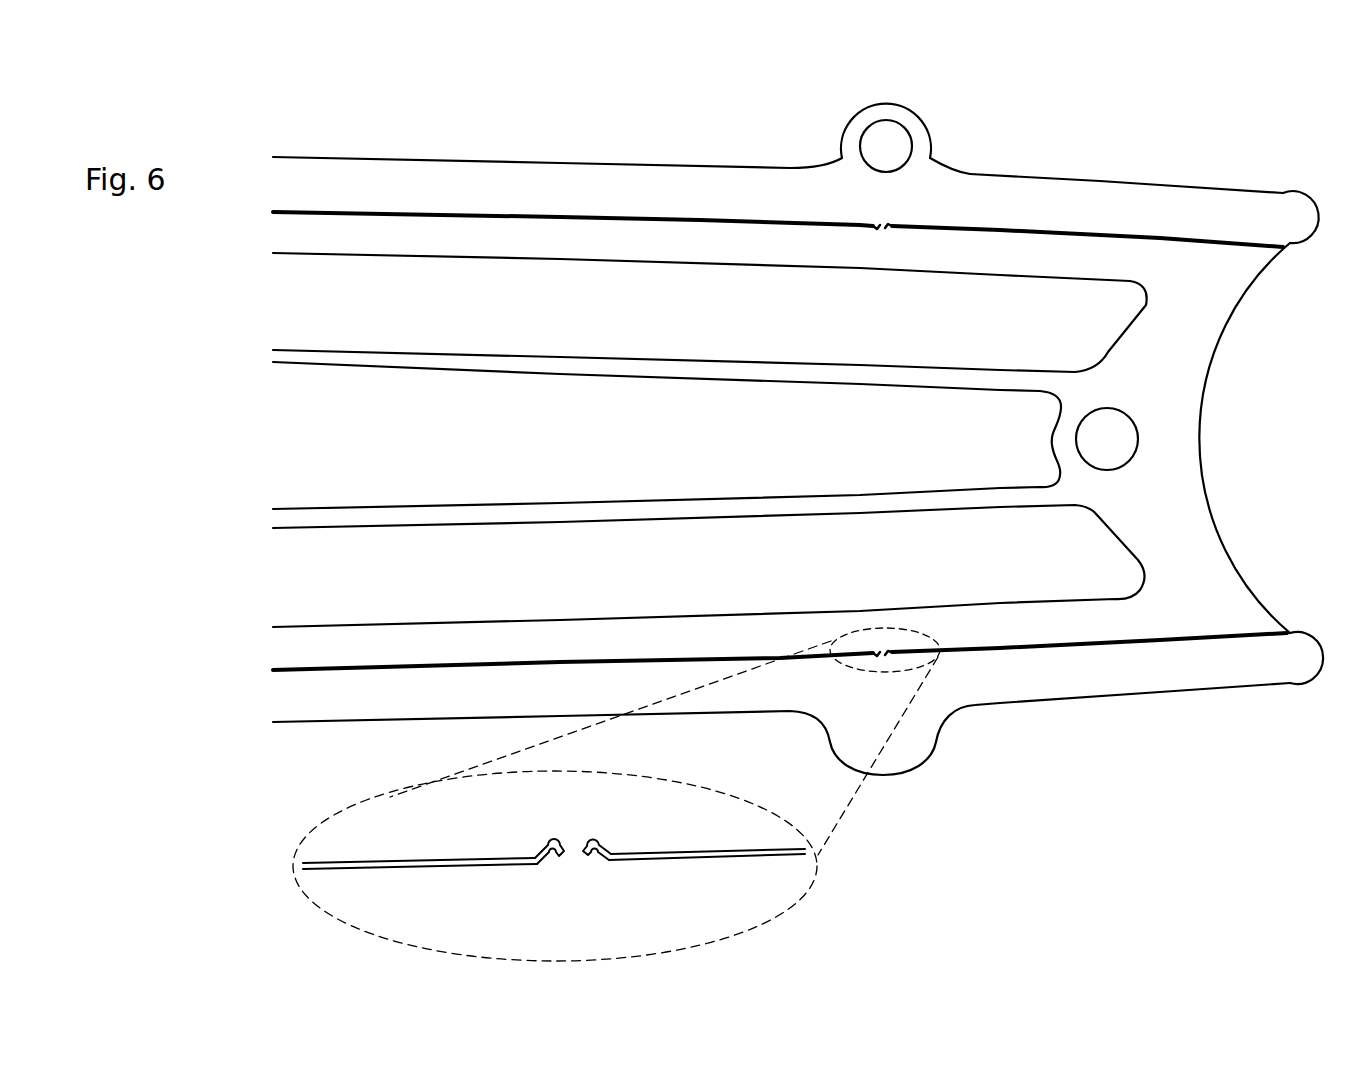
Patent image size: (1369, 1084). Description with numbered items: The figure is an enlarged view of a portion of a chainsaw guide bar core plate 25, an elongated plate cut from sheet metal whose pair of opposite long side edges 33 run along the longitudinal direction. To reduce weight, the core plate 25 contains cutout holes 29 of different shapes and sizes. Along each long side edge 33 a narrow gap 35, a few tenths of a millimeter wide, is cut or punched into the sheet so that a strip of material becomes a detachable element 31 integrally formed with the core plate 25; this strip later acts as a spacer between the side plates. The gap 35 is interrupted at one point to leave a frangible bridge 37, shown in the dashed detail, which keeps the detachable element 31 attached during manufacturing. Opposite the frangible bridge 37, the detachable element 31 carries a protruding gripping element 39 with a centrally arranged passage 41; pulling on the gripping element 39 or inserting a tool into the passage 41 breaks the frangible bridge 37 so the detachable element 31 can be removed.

The core plate 25 is at (612, 100).
The cutout hole 29 is at (1042, 565).
The detachable element 31 is at (463, 183).
The long side edge 33 is at (410, 157).
The gap 35 is at (1068, 230).
The frangible bridge 37 is at (886, 209).
The gripping element 39 is at (900, 117).
The passage 41 is at (883, 143).